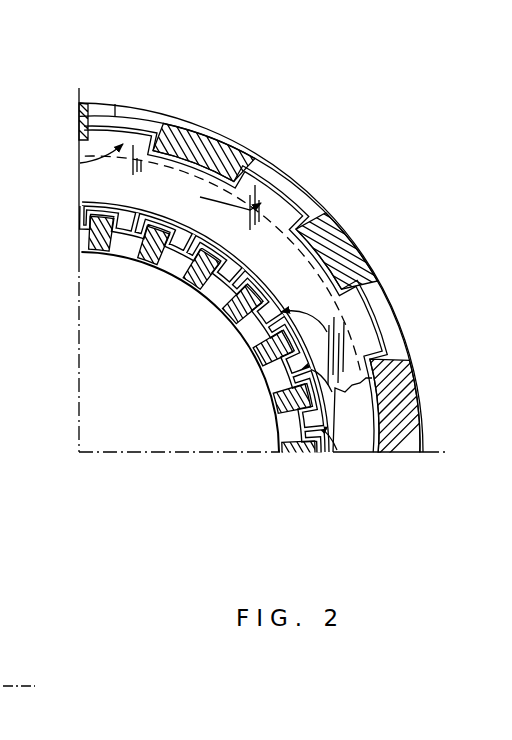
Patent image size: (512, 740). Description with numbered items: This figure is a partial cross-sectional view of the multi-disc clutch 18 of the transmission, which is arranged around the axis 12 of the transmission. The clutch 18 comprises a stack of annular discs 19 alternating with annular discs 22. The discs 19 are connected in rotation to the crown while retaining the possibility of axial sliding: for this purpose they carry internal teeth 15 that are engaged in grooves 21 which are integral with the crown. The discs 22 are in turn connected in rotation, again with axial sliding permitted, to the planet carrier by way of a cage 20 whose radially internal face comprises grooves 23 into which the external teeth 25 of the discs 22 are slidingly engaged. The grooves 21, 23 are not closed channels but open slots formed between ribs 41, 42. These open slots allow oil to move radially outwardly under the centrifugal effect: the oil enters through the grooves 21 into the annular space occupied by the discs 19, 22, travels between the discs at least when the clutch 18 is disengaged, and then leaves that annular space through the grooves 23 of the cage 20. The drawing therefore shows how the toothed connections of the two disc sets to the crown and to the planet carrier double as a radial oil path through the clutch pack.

The axis 12 is at (78, 452).
The internal teeth 15 is at (202, 342).
The multi-disc clutch 18 is at (292, 288).
The annular discs 19 is at (368, 458).
The cage 20 is at (410, 457).
The grooves 21 is at (357, 437).
The annular discs 22 is at (92, 190).
The grooves 23 is at (200, 197).
The external teeth 25 is at (103, 104).
The ribs 41 is at (152, 257).
The ribs 42 is at (214, 138).